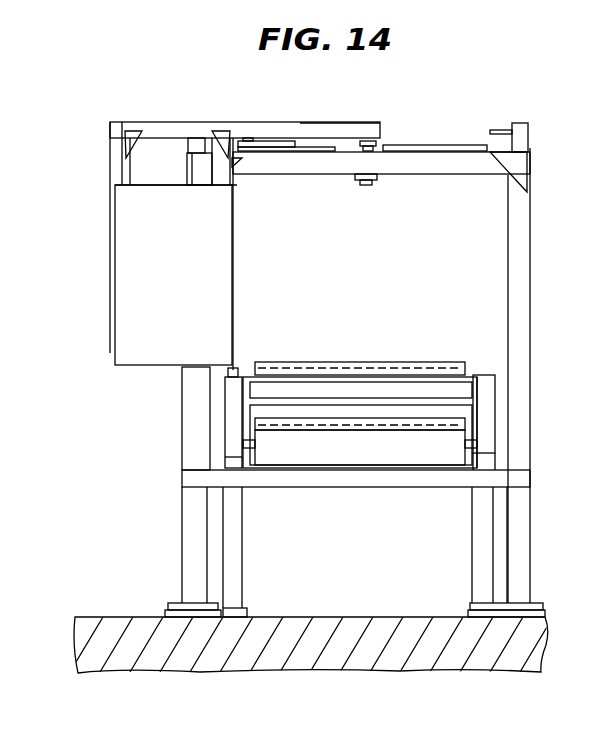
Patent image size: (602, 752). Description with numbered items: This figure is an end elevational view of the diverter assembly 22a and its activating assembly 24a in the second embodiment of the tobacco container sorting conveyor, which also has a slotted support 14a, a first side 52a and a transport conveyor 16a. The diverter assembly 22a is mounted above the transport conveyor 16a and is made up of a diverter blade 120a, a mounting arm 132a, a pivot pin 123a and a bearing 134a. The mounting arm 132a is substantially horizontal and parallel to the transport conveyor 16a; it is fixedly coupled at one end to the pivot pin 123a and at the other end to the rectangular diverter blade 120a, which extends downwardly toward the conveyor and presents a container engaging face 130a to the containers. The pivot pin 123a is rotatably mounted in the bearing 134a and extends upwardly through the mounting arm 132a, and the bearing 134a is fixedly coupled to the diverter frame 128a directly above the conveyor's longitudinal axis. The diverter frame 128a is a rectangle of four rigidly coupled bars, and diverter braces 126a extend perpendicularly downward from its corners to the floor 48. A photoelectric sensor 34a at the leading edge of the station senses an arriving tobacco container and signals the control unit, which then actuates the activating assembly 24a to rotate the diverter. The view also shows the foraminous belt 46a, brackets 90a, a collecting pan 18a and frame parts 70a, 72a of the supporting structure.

The diverter assembly 22a is at (249, 100).
The mounting arm 132a is at (257, 122).
The pivot pin 123a is at (367, 122).
The bearing 134a is at (380, 148).
The activating assembly 24a is at (270, 151).
The diverter frame 128a is at (410, 176).
The diverter blade 120a is at (236, 274).
The diverter brace 126a is at (507, 248).
The container engaging face 130a is at (190, 271).
The transport conveyor 16a is at (422, 342).
The slotted support 14a is at (478, 372).
The first side 52a is at (503, 375).
The photoelectric sensor 34a is at (226, 370).
The shelf 46a is at (274, 360).
The support post 90a is at (225, 412).
The tray 18a is at (403, 412).
The base bar 70a is at (327, 468).
The base bar end 72a is at (468, 488).
The floor 48 is at (368, 612).